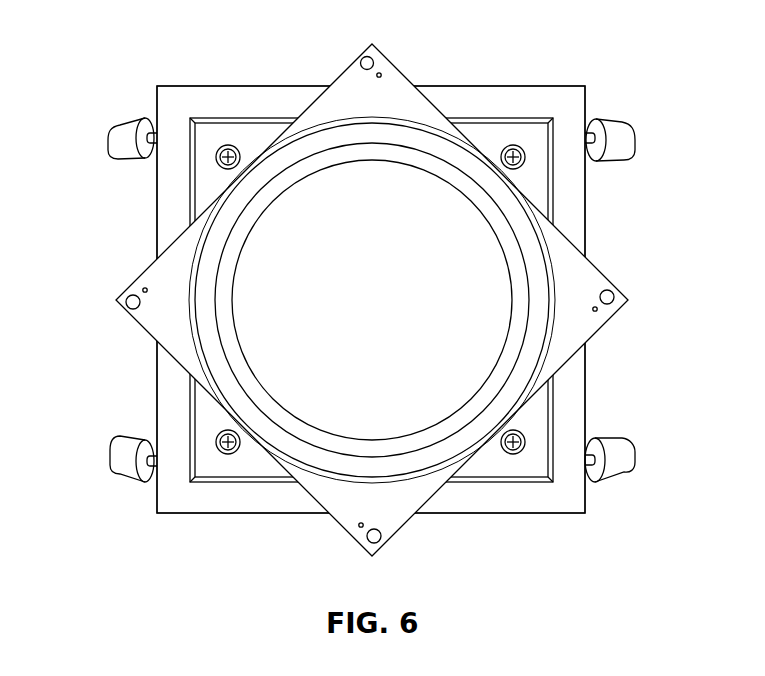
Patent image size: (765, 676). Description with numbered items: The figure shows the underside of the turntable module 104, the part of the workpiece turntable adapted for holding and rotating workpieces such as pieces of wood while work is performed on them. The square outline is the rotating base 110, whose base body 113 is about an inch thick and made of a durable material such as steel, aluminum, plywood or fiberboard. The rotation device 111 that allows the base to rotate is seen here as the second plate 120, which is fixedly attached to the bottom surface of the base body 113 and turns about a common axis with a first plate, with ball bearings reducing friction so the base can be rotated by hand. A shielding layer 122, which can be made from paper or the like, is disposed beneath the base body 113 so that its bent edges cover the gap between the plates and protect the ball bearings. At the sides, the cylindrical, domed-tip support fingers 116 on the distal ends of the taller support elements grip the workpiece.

The turntable module 104 is at (372, 297).
The rotating base 110 is at (587, 498).
The rotation device 111 is at (362, 300).
The base body 113 is at (522, 95).
The support finger 116 is at (107, 143).
The second plate 120 is at (592, 323).
The shielding layer 122 is at (502, 482).